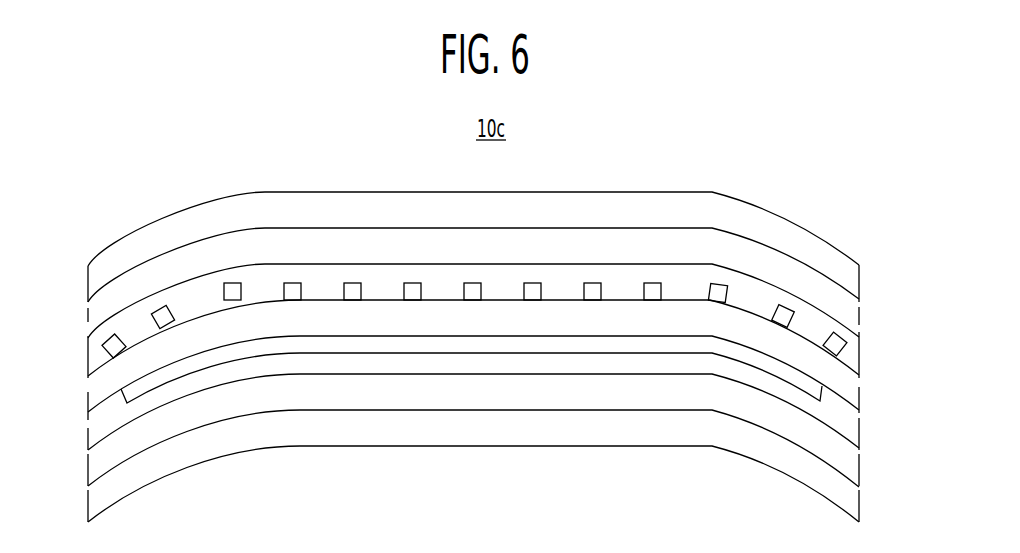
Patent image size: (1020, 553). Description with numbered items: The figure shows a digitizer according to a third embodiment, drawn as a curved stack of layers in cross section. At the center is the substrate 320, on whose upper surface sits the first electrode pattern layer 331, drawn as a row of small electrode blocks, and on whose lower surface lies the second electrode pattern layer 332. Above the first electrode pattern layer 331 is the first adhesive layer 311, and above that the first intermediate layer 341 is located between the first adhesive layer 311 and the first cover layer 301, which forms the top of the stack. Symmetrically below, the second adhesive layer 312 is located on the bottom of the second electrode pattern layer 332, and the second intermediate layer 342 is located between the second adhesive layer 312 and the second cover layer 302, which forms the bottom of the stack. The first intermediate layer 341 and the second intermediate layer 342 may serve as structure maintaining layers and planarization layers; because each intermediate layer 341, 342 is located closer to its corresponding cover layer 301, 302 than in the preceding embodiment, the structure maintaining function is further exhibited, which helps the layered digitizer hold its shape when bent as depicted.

The first cover layer 301 is at (846, 284).
The second cover layer 302 is at (846, 504).
The first adhesive layer 311 is at (846, 359).
The second adhesive layer 312 is at (846, 431).
The substrate 320 is at (850, 394).
The first electrode pattern layer 331 is at (103, 349).
The second electrode pattern layer 332 is at (118, 394).
The first intermediate layer 341 is at (850, 322).
The second intermediate layer 342 is at (850, 467).